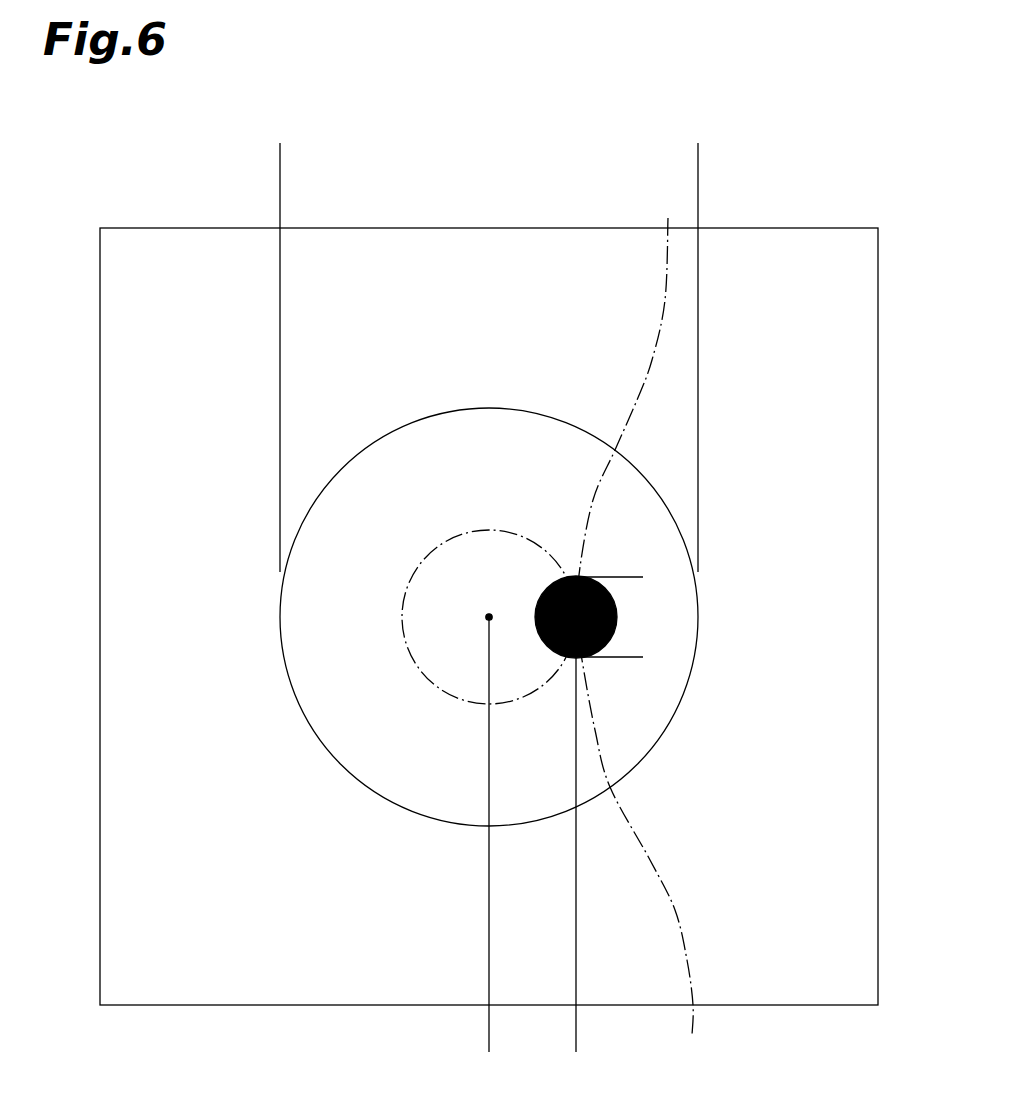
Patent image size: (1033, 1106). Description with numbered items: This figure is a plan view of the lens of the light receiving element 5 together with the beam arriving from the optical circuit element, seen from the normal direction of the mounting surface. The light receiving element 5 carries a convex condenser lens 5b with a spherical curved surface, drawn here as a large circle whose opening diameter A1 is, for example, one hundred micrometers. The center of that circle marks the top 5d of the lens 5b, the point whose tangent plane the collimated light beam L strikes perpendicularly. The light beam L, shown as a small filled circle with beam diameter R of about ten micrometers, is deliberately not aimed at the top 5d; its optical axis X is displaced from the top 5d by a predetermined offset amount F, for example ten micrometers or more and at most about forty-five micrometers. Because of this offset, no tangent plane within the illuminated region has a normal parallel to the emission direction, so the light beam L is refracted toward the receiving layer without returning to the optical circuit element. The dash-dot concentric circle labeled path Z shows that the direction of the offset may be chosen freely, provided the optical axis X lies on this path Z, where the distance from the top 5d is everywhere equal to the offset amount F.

The light receiving element 5 is at (811, 248).
The lens 5b is at (670, 658).
The top 5d is at (488, 617).
The path Z is at (405, 642).
The beam diameter R is at (630, 577).
The optical axis X is at (625, 403).
The light beam L is at (638, 839).
The opening diameter A1 is at (698, 177).
The offset amount F is at (576, 1037).